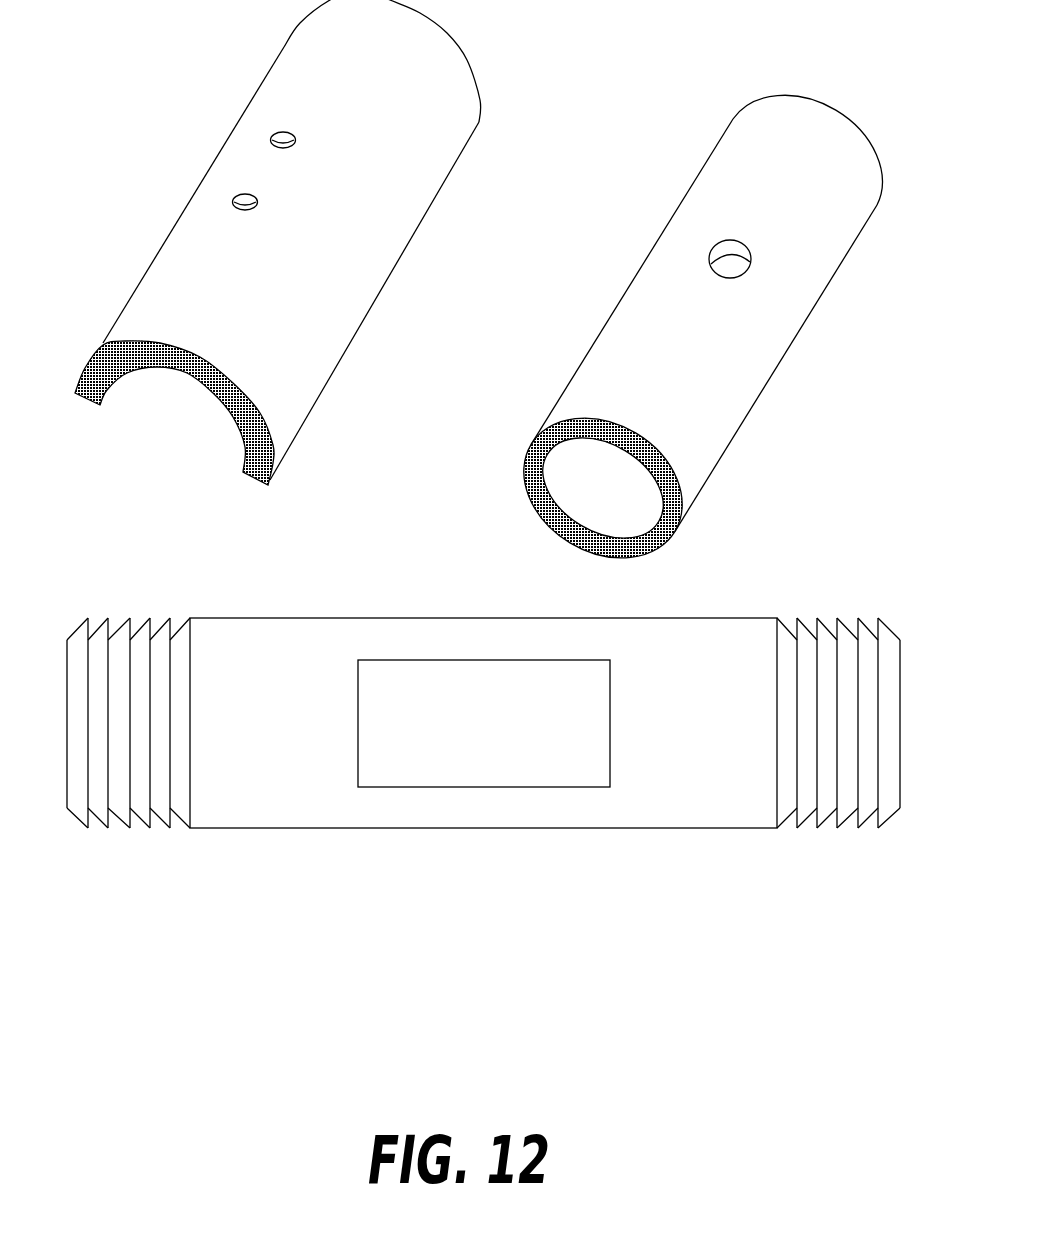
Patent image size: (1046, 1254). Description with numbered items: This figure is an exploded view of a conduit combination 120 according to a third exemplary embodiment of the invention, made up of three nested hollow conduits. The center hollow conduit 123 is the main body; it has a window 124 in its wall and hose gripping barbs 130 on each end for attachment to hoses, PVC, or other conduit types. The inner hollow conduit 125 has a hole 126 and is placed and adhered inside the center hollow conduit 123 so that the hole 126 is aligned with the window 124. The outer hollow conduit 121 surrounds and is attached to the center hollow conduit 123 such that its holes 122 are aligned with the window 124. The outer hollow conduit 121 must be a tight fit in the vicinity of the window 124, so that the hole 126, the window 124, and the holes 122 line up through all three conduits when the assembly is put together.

The conduit combination 120 is at (295, 242).
The outer hollow conduit 121 is at (377, 205).
The holes 122 is at (275, 134).
The center hollow conduit 123 is at (483, 797).
The window 124 is at (580, 767).
The inner hollow conduit 125 is at (724, 326).
The hole 126 is at (717, 250).
The hose gripping barbs 130 is at (127, 822).